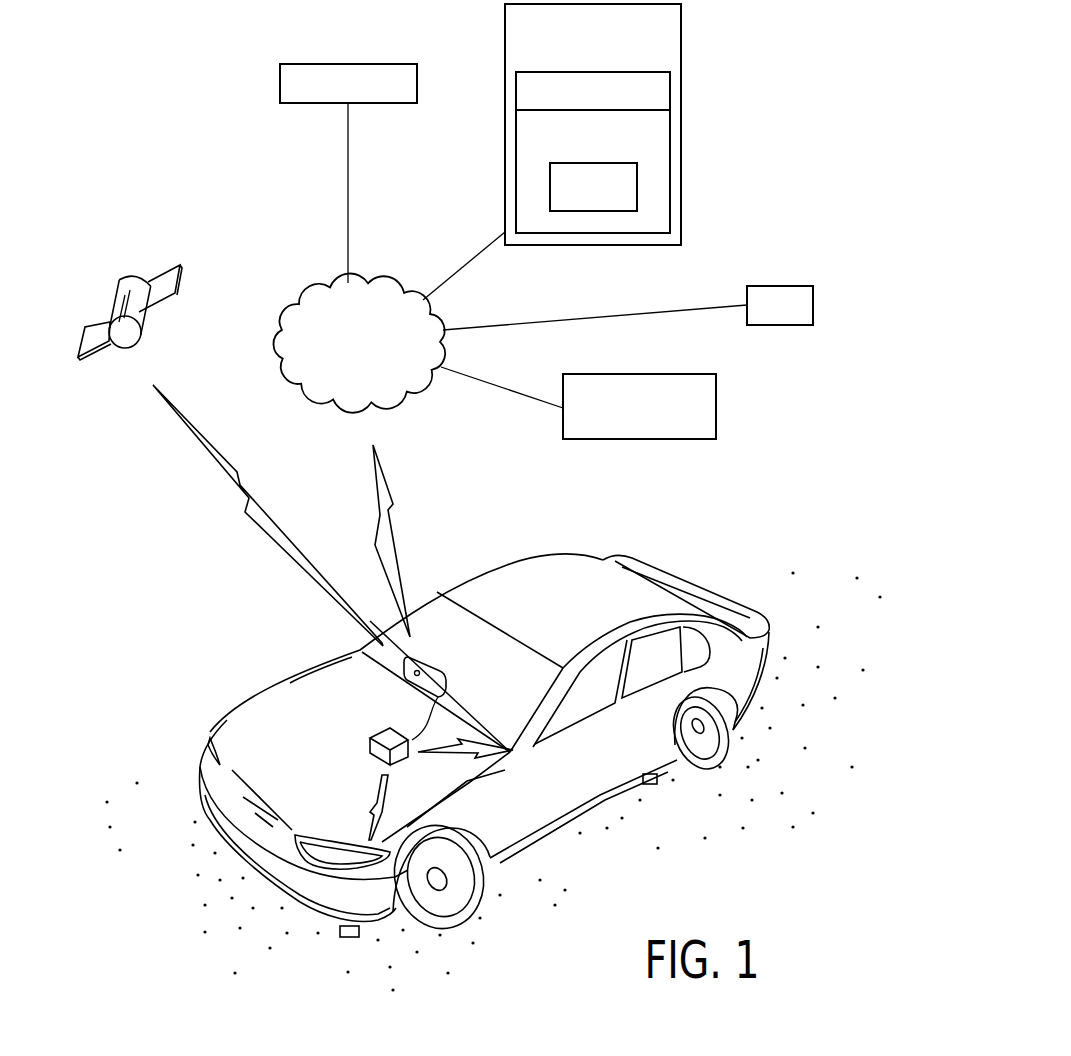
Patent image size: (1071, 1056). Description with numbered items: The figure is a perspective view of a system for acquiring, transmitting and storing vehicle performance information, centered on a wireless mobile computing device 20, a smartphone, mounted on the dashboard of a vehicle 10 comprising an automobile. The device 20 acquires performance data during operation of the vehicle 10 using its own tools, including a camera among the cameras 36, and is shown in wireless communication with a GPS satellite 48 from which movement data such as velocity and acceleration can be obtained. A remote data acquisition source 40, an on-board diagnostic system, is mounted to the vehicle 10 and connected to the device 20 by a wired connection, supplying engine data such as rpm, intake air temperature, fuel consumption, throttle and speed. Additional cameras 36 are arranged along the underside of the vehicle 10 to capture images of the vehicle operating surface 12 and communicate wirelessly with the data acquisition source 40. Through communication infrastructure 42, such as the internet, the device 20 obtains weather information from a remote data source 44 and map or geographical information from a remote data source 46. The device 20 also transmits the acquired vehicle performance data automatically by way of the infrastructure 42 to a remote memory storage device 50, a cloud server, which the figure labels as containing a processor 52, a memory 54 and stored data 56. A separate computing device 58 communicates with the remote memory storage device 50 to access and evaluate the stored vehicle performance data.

The vehicle 10 is at (757, 612).
The vehicle operating surface 12 is at (798, 790).
The wireless mobile computing device 20 is at (437, 671).
The cameras 36 is at (417, 674).
The remote data acquisition source 40 is at (370, 740).
The communication infrastructure 42 is at (310, 288).
The remote data source 44 is at (280, 72).
The remote data source 46 is at (778, 325).
The GPS satellite 48 is at (96, 355).
The remote memory storage device 50 is at (627, 124).
The processor 52 is at (670, 85).
The memory 54 is at (670, 133).
The data 56 is at (637, 187).
The computing device 58 is at (693, 439).